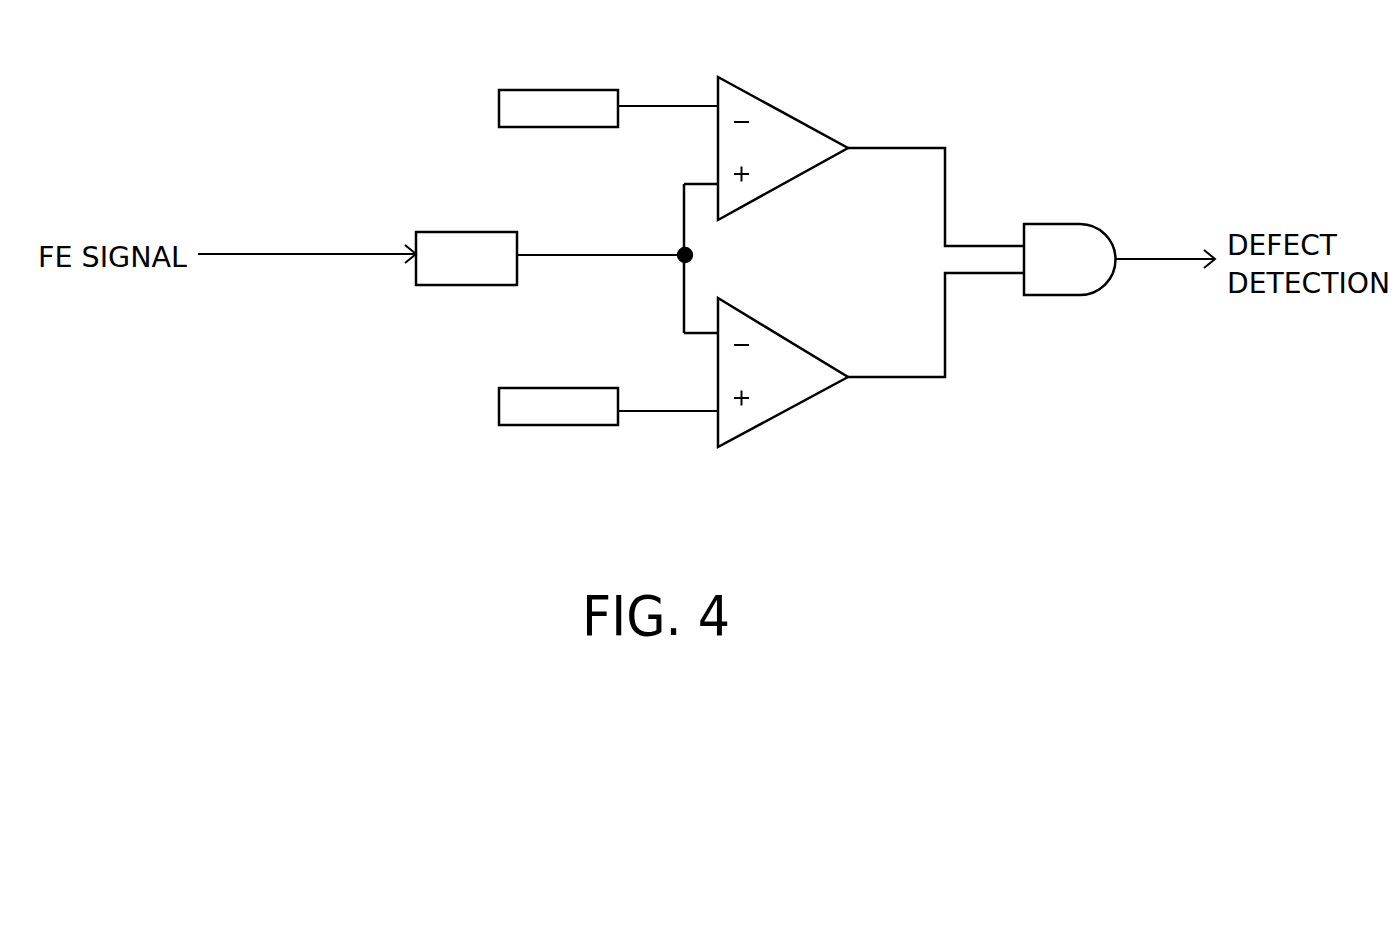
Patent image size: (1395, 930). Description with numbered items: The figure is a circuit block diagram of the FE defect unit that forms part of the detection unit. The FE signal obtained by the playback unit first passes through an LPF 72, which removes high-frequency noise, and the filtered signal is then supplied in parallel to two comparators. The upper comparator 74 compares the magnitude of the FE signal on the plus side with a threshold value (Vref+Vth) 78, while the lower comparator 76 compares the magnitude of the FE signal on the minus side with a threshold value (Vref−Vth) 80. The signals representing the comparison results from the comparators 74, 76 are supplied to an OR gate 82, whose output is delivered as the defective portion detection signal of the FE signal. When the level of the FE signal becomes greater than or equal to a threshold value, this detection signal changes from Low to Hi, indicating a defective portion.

The LPF 72 is at (449, 232).
The comparator 74 is at (782, 105).
The comparator 76 is at (787, 337).
The threshold value (Vref+Vth) 78 is at (528, 90).
The threshold value (Vref−Vth) 80 is at (566, 388).
The OR gate 82 is at (1063, 224).